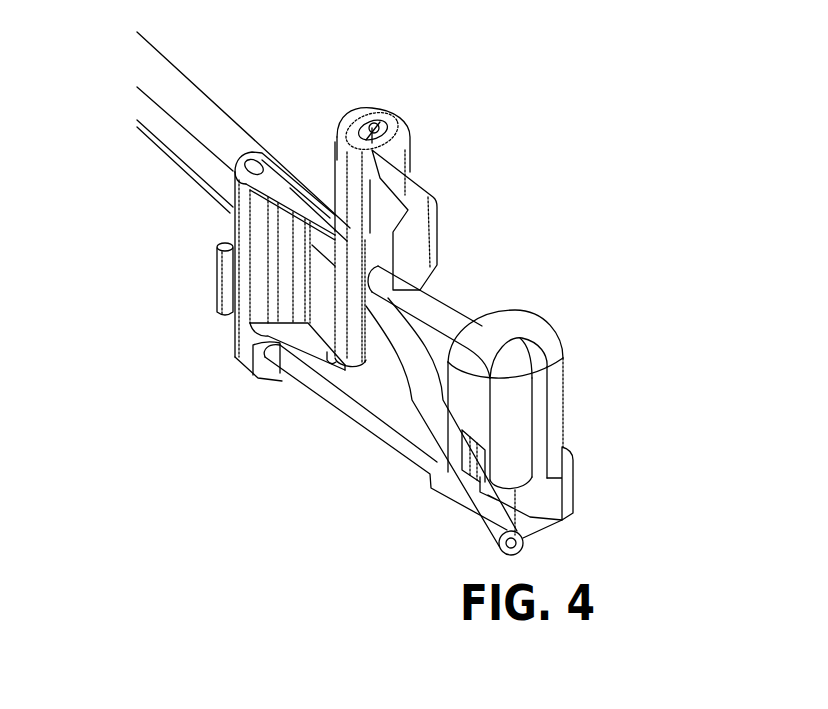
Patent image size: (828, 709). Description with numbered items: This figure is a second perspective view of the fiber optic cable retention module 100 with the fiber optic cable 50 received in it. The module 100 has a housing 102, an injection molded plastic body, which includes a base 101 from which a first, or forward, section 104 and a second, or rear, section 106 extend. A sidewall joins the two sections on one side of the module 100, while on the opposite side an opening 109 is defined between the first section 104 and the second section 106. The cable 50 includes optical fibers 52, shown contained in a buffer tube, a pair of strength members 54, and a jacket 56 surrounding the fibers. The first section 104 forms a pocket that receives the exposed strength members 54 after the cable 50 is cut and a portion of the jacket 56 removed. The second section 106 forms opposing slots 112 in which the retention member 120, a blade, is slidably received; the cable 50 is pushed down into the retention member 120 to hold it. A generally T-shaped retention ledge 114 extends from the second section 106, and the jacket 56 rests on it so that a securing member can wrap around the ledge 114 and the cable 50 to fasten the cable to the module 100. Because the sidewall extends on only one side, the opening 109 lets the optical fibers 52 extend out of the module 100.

The fiber optic cable 50 is at (238, 68).
The jacket 56 is at (203, 148).
The retention member 120 is at (360, 180).
The slots 112 is at (375, 125).
The second section 106 is at (410, 200).
The retention ledge 114 is at (215, 283).
The strength members 54 is at (422, 300).
The optical fibers 52 is at (477, 505).
The base 101 is at (390, 445).
The opening 109 is at (368, 381).
The housing 102 is at (523, 312).
The first section 104 is at (543, 422).
The fiber optic cable retention module 100 is at (625, 326).